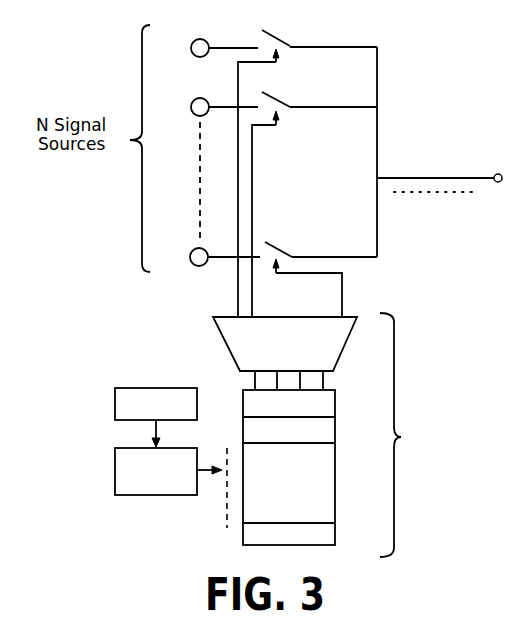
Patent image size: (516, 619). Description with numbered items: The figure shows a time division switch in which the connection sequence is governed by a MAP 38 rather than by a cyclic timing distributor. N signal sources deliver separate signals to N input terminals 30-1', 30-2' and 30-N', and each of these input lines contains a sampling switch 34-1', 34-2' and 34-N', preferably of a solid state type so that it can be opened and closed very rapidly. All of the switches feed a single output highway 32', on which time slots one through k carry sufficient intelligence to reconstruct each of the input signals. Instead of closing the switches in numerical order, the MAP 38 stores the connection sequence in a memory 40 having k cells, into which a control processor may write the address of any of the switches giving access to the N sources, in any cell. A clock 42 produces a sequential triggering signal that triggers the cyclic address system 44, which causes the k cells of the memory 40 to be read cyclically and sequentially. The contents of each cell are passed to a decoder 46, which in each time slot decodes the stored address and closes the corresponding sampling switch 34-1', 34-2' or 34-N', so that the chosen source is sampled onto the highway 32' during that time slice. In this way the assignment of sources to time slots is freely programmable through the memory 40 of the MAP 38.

The input terminal 30-1' is at (215, 34).
The input terminal 30-2' is at (215, 92).
The input terminal 30-N' is at (205, 236).
The sampling switch 34-1' is at (307, 163).
The sampling switch 34-2' is at (314, 195).
The sampling switch 34-N' is at (321, 269).
The output highway 32' is at (439, 152).
The decoder 46 is at (222, 340).
The memory 40 is at (345, 477).
The MAP 38 is at (396, 401).
The clock 42 is at (115, 400).
The cyclic address system 44 is at (115, 463).